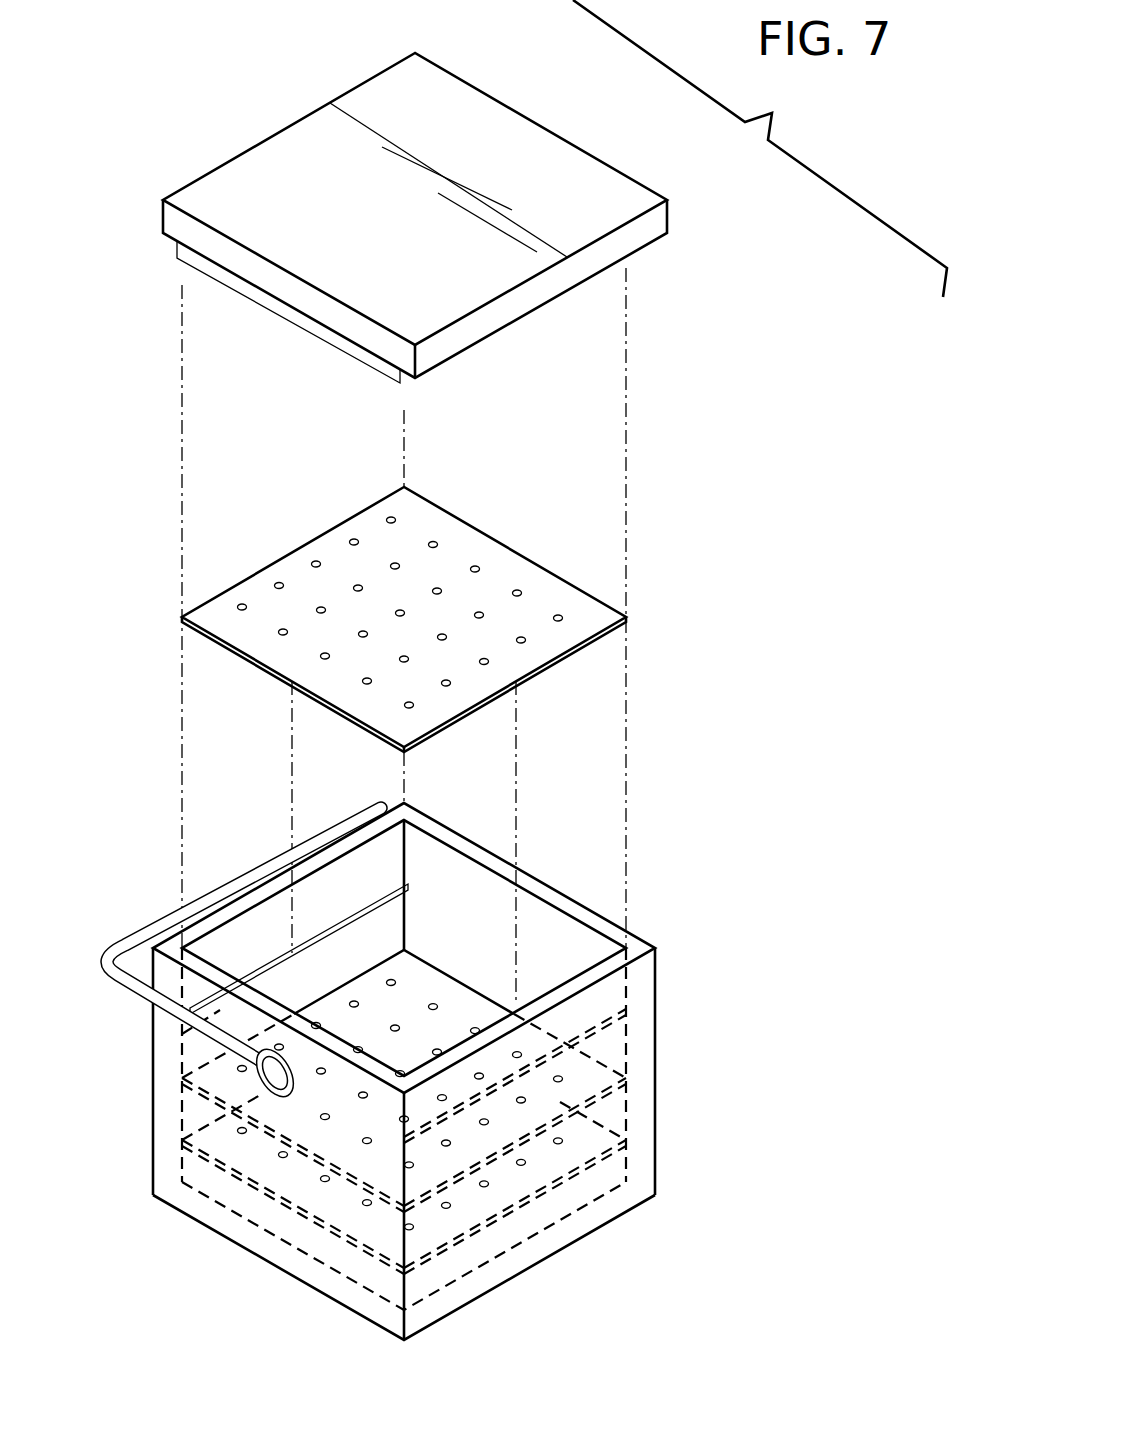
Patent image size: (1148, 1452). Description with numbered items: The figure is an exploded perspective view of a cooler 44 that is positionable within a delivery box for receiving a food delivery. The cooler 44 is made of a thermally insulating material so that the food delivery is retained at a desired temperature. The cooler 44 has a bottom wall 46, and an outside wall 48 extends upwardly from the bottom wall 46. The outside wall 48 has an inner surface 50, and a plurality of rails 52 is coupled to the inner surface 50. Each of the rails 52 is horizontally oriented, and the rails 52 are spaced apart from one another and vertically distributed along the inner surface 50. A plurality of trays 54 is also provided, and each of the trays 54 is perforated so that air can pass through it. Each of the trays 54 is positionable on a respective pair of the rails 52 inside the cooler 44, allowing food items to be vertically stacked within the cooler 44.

The cooler 44 is at (655, 1073).
The bottom wall 46 is at (548, 1258).
The outside wall 48 is at (150, 1075).
The inner surface 50 is at (553, 932).
The rails 52 is at (277, 957).
The trays 54 is at (627, 617).